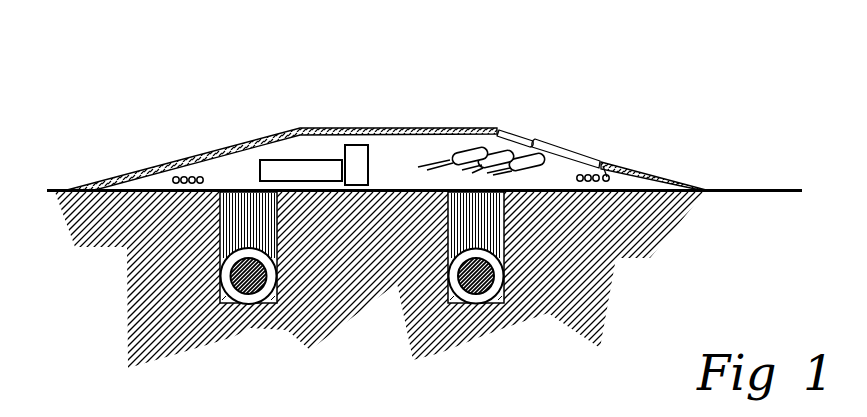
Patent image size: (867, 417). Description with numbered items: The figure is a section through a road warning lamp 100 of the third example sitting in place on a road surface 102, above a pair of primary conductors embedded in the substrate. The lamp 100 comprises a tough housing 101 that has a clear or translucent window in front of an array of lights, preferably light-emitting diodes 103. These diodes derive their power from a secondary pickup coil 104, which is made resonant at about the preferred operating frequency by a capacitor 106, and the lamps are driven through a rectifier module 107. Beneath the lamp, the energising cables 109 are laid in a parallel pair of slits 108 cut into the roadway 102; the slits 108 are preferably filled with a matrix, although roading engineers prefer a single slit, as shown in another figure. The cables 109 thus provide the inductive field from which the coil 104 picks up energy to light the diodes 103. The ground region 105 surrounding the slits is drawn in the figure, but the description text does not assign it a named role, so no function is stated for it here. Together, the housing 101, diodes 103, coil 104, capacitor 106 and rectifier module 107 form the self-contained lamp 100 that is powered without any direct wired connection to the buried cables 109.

The road warning lamp 100 is at (627, 65).
The housing 101 is at (222, 142).
The road surface 102 is at (762, 162).
The light-emitting diodes 103 is at (534, 140).
The secondary pickup coil 104 is at (640, 169).
The ground 105 is at (673, 235).
The capacitor 106 is at (309, 160).
The rectifier module 107 is at (368, 152).
The slits 108 is at (277, 233).
The energising cables 109 is at (470, 296).